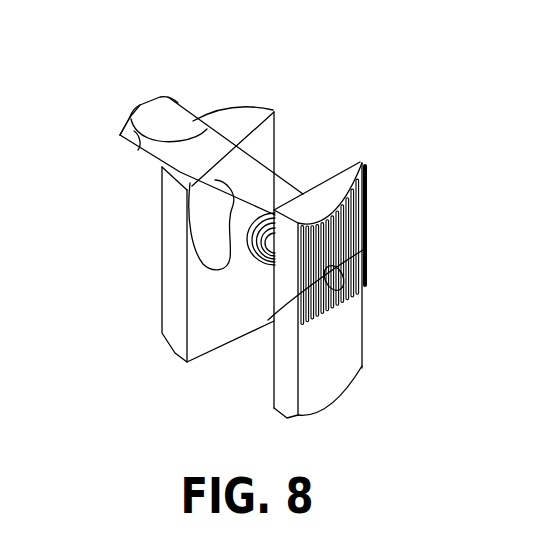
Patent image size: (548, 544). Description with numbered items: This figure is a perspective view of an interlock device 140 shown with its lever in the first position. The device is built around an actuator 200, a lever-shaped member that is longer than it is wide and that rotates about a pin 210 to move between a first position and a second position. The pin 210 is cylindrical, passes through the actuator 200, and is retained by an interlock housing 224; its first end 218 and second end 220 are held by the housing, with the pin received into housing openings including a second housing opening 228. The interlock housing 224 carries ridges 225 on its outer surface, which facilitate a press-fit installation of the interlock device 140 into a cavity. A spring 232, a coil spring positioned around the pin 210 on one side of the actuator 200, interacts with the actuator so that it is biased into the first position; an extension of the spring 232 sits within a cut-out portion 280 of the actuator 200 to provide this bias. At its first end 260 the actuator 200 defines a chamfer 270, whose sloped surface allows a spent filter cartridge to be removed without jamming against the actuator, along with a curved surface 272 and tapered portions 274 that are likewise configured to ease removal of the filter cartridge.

The interlock device 140 is at (358, 52).
The actuator 200 is at (178, 104).
The pin 210 is at (364, 248).
The first end 218 is at (163, 170).
The second end 220 is at (268, 320).
The interlock housing 224 is at (349, 352).
The ridges 225 is at (367, 216).
The second housing opening 228 is at (340, 289).
The spring 232 is at (273, 262).
The first end 260 is at (122, 134).
The chamfer 270 is at (160, 113).
The curved surface 272 is at (137, 143).
The tapered portions 274 is at (130, 128).
The cut-out portion 280 is at (270, 160).